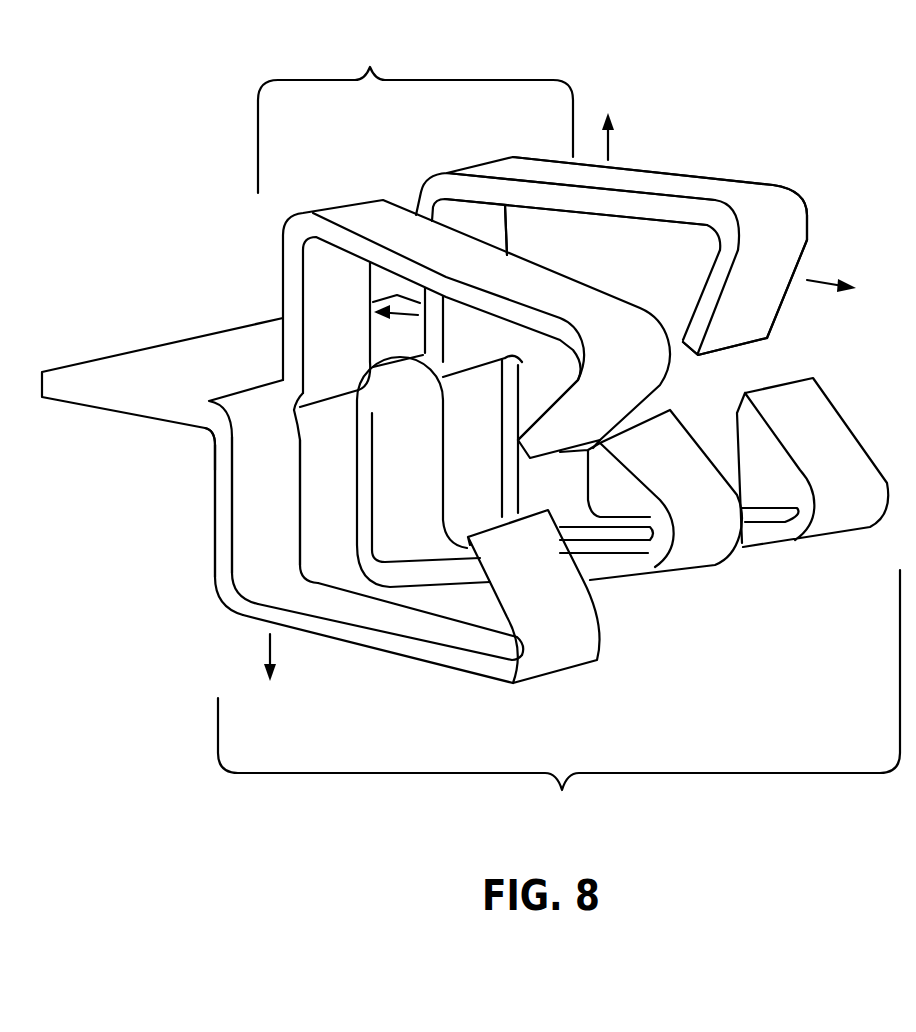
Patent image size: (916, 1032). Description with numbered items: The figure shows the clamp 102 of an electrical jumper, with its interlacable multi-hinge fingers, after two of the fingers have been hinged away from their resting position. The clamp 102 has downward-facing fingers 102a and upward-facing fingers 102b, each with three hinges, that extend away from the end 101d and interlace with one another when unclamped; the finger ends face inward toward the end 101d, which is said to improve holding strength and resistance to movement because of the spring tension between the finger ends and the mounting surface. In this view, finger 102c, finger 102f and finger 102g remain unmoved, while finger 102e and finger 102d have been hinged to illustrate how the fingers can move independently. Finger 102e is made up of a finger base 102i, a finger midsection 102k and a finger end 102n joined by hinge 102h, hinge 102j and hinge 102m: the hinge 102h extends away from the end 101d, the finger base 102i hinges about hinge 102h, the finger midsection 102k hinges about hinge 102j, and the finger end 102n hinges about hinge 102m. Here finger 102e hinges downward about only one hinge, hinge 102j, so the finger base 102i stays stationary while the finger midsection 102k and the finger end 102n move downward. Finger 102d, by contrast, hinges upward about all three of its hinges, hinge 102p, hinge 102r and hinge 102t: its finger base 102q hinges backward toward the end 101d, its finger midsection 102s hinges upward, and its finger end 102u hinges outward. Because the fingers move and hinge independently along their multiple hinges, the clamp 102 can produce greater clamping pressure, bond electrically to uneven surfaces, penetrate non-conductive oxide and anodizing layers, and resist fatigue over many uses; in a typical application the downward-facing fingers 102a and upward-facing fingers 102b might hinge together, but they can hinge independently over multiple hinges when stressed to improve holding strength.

The end 101d is at (203, 335).
The clamp 102 is at (748, 95).
The downward-facing fingers 102a is at (415, 114).
The upward-facing fingers 102b is at (559, 699).
The finger 102c is at (284, 282).
The finger 102d is at (748, 180).
The finger 102e is at (327, 639).
The finger 102f is at (636, 588).
The finger 102g is at (760, 585).
The hinge 102h is at (212, 438).
The finger base 102i is at (215, 505).
The hinge 102j is at (217, 600).
The finger midsection 102k is at (418, 665).
The hinge 102m is at (588, 651).
The finger end 102n is at (490, 522).
The hinge 102p is at (478, 380).
The finger base 102q is at (507, 220).
The hinge 102r is at (425, 187).
The finger midsection 102s is at (648, 170).
The hinge 102t is at (795, 218).
The finger end 102u is at (787, 303).